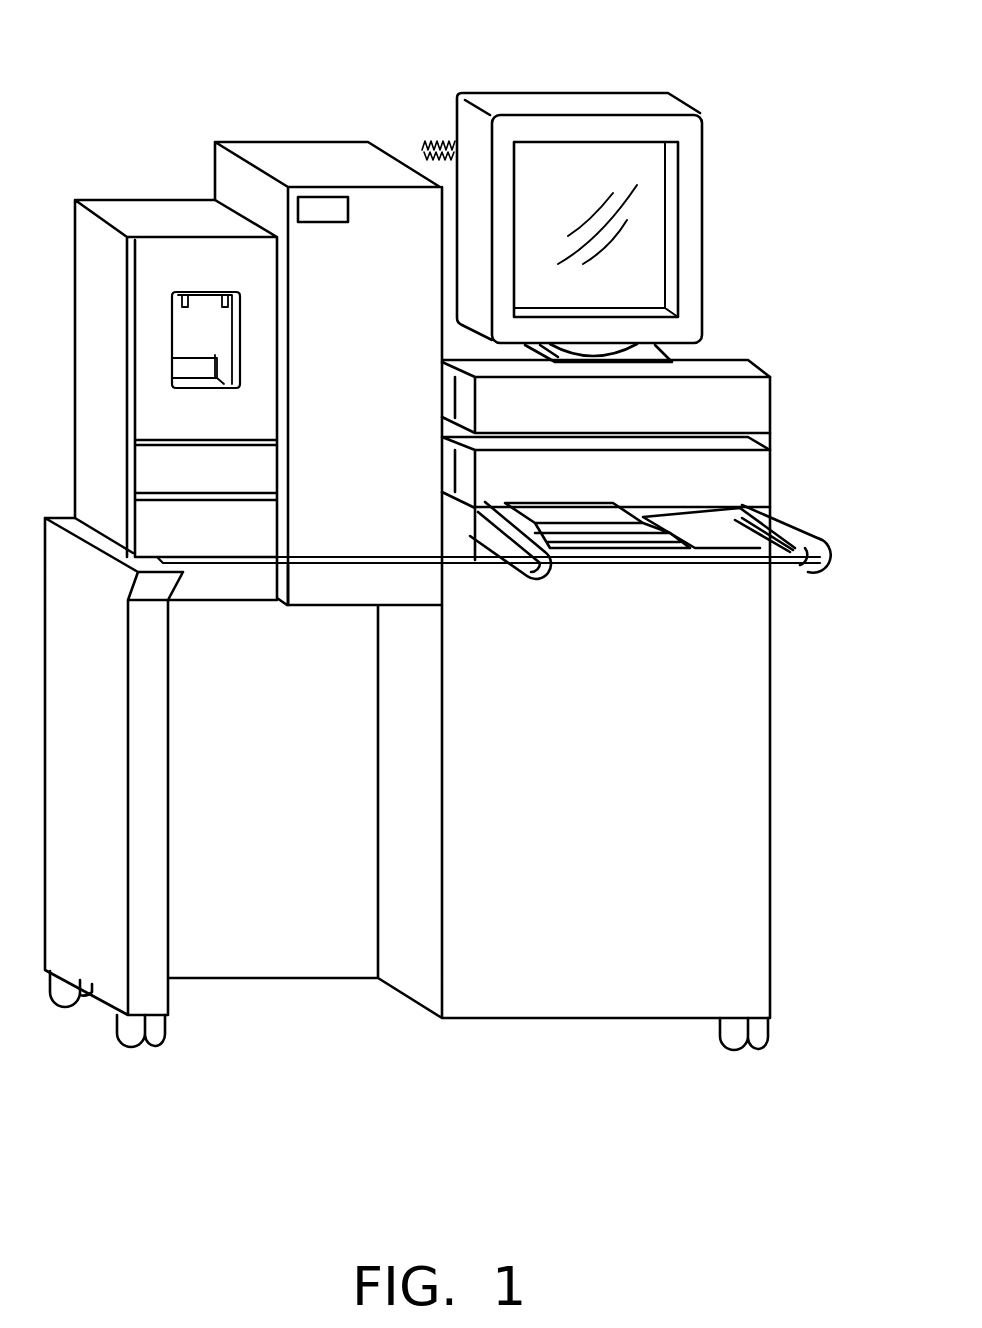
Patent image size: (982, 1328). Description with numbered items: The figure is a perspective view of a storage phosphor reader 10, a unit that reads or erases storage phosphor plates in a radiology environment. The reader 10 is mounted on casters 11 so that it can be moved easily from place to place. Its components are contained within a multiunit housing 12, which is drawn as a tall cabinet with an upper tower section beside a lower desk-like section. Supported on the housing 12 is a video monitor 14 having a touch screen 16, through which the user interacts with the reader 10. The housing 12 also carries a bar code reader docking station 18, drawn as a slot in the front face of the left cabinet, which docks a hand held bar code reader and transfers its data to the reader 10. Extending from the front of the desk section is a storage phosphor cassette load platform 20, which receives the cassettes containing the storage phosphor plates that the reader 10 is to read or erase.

The storage phosphor reader 10 is at (357, 105).
The casters 11 is at (137, 1052).
The multiunit housing 12 is at (272, 143).
The video monitor 14 is at (622, 95).
The touch screen 16 is at (657, 246).
The bar code reader docking station 18 is at (188, 330).
The storage phosphor cassette load platform 20 is at (817, 537).